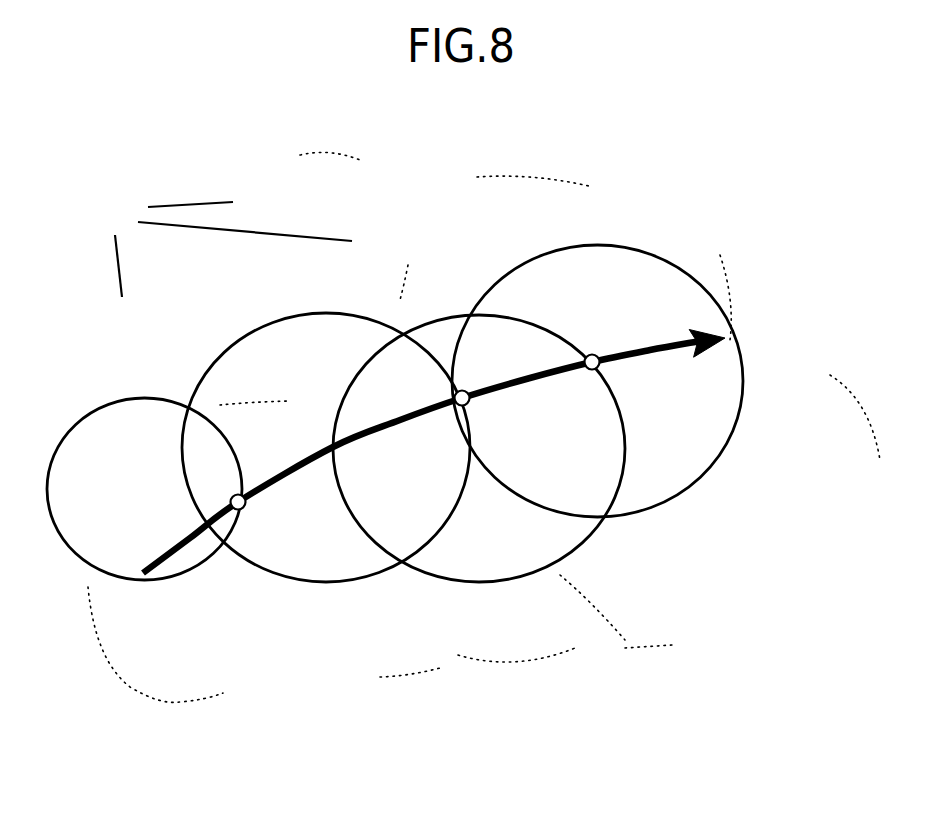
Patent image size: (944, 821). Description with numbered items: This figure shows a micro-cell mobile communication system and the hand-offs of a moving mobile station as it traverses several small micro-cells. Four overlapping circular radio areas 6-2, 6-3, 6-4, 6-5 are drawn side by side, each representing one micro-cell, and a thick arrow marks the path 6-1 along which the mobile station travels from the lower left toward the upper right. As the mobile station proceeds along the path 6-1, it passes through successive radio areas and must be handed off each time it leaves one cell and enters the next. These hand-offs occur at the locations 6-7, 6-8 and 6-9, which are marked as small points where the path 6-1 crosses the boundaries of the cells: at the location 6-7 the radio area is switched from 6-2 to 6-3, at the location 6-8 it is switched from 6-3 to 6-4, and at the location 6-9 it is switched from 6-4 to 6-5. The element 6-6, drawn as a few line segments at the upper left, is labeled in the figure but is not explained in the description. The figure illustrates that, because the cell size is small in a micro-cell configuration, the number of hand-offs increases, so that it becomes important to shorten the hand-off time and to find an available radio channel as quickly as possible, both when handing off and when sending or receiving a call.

The path 6-1 is at (459, 451).
The radio area 6-2 is at (144, 489).
The radio area 6-3 is at (326, 447).
The radio area 6-4 is at (479, 448).
The radio area 6-5 is at (597, 381).
The obstacle 6-6 is at (217, 244).
The hand-off location 6-7 is at (245, 507).
The hand-off location 6-8 is at (470, 403).
The hand-off location 6-9 is at (599, 368).